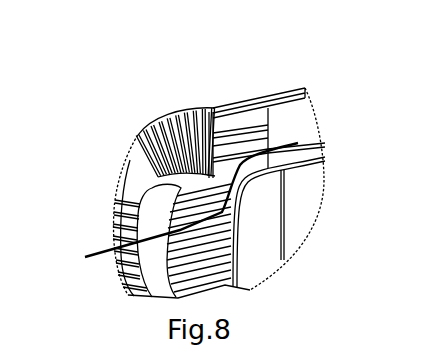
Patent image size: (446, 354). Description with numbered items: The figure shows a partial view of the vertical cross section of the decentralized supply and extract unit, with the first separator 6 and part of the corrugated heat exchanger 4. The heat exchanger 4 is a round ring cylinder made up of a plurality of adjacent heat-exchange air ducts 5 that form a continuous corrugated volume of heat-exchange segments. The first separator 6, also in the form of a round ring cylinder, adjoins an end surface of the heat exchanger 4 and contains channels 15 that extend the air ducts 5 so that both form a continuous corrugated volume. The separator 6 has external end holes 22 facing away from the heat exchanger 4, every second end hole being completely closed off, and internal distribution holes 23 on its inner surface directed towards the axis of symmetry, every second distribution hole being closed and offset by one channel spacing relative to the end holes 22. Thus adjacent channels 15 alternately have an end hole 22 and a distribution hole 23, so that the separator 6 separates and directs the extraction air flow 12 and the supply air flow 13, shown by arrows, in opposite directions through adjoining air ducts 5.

The corrugated heat exchanger 4 is at (288, 83).
The heat-exchange air ducts 5 is at (287, 117).
The first separator 6 is at (136, 134).
The extraction air flow 12 is at (150, 171).
The supply air flow 13 is at (176, 212).
The channels of the separator 15 is at (245, 130).
The external end holes 22 is at (147, 156).
The internal distribution holes 23 is at (183, 210).